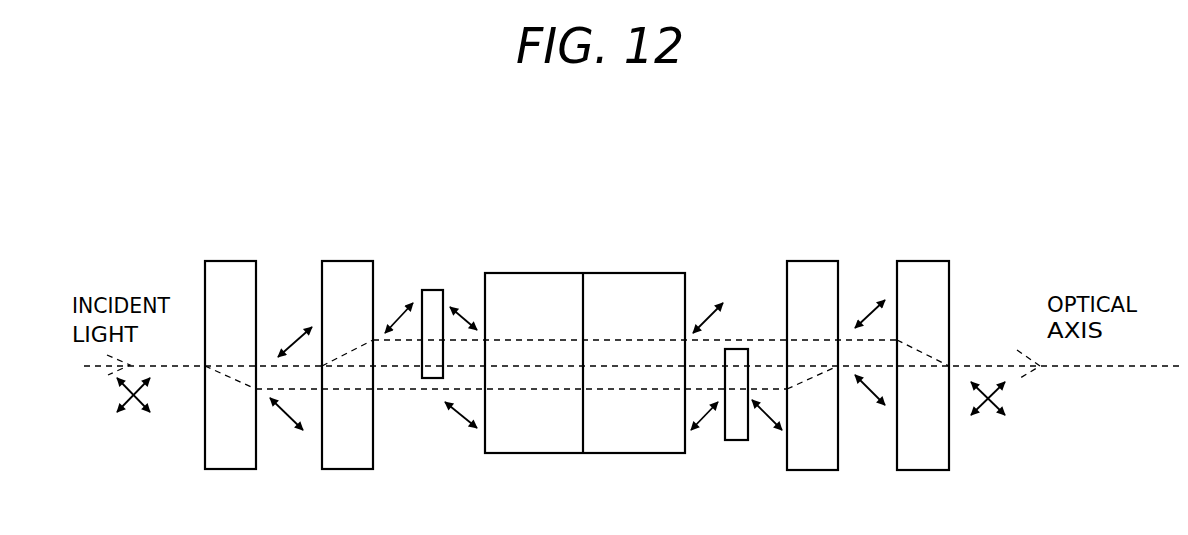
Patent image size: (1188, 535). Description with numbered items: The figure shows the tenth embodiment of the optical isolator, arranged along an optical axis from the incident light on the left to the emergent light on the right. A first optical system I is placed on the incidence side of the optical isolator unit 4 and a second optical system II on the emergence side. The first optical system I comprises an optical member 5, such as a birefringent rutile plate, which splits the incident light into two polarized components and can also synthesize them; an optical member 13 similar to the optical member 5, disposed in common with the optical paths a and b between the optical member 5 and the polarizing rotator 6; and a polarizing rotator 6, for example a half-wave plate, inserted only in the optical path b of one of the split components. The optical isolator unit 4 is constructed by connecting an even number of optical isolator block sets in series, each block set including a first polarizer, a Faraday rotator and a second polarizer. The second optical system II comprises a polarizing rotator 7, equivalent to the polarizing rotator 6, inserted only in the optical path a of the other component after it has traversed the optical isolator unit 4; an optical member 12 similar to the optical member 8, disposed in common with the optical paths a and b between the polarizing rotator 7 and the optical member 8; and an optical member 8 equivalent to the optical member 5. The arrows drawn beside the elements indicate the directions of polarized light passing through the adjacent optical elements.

The first optical system I is at (217, 167).
The second optical system II is at (943, 168).
The optical member 5 is at (222, 262).
The optical member 13 is at (345, 268).
The polarizing rotator 6 is at (431, 292).
The optical isolator unit 4 is at (515, 286).
The polarizing rotator 7 is at (740, 350).
The optical member 12 is at (818, 263).
The optical member 8 is at (926, 265).
The optical path a is at (612, 340).
The optical path b is at (630, 389).